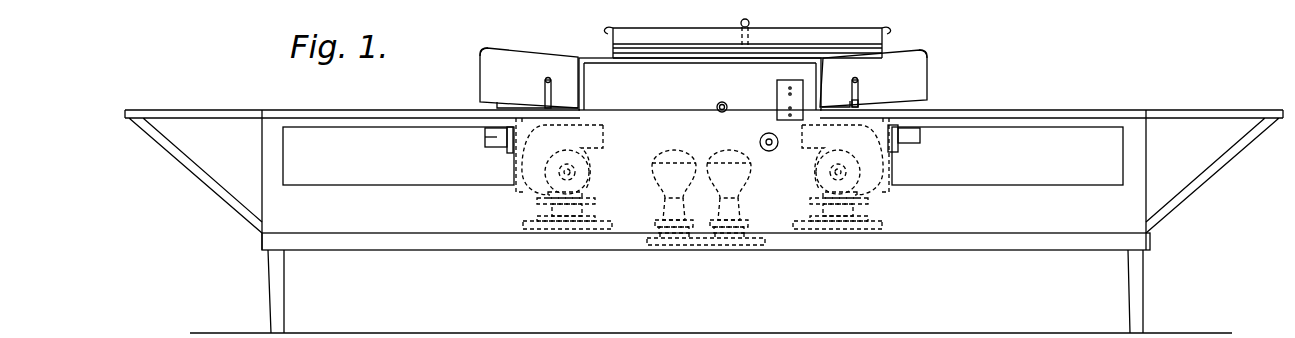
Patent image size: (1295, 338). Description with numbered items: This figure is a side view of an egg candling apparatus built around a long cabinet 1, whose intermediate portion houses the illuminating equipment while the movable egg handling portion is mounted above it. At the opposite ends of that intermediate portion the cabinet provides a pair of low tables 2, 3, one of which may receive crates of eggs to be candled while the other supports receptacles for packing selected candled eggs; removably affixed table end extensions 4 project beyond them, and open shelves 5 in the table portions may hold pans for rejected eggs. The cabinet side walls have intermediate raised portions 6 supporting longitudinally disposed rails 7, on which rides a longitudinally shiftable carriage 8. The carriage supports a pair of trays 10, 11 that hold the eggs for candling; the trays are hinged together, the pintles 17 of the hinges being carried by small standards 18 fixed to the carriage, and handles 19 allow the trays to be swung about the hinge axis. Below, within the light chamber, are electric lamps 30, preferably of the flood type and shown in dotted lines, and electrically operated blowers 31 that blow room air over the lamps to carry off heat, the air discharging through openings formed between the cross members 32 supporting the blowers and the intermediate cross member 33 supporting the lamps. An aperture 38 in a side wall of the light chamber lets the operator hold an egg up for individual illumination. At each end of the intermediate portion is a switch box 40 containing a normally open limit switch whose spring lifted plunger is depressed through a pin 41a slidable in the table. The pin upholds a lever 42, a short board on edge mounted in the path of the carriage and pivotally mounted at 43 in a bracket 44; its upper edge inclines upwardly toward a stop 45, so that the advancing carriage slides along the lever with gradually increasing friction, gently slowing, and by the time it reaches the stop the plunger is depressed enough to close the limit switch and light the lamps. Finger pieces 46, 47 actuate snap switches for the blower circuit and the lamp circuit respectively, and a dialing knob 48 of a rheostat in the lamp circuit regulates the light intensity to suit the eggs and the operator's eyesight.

The cabinet 1 is at (381, 222).
The table 2 is at (338, 110).
The table 3 is at (1070, 109).
The table end extension 4 is at (194, 110).
The open shelf 5 is at (413, 182).
The raised portion 6 is at (655, 98).
The rail 7 is at (585, 57).
The carriage 8 is at (610, 50).
The tray 10 is at (652, 33).
The tray 11 is at (814, 35).
The pintle 17 is at (741, 23).
The standard 18 is at (750, 33).
The handle 19 is at (606, 30).
The electric lamp 30 is at (722, 155).
The blower 31 is at (537, 182).
The cross member 32 is at (604, 220).
The intermediate cross member 33 is at (770, 245).
The aperture 38 is at (717, 108).
The switch box 40 is at (485, 138).
The pin 41a is at (957, 94).
The lever 42 is at (483, 64).
The pivot 43 is at (543, 80).
The bracket 44 is at (859, 90).
The stop 45 is at (503, 35).
The finger piece 46 is at (777, 92).
The finger piece 47 is at (777, 107).
The dialing knob 48 is at (773, 152).